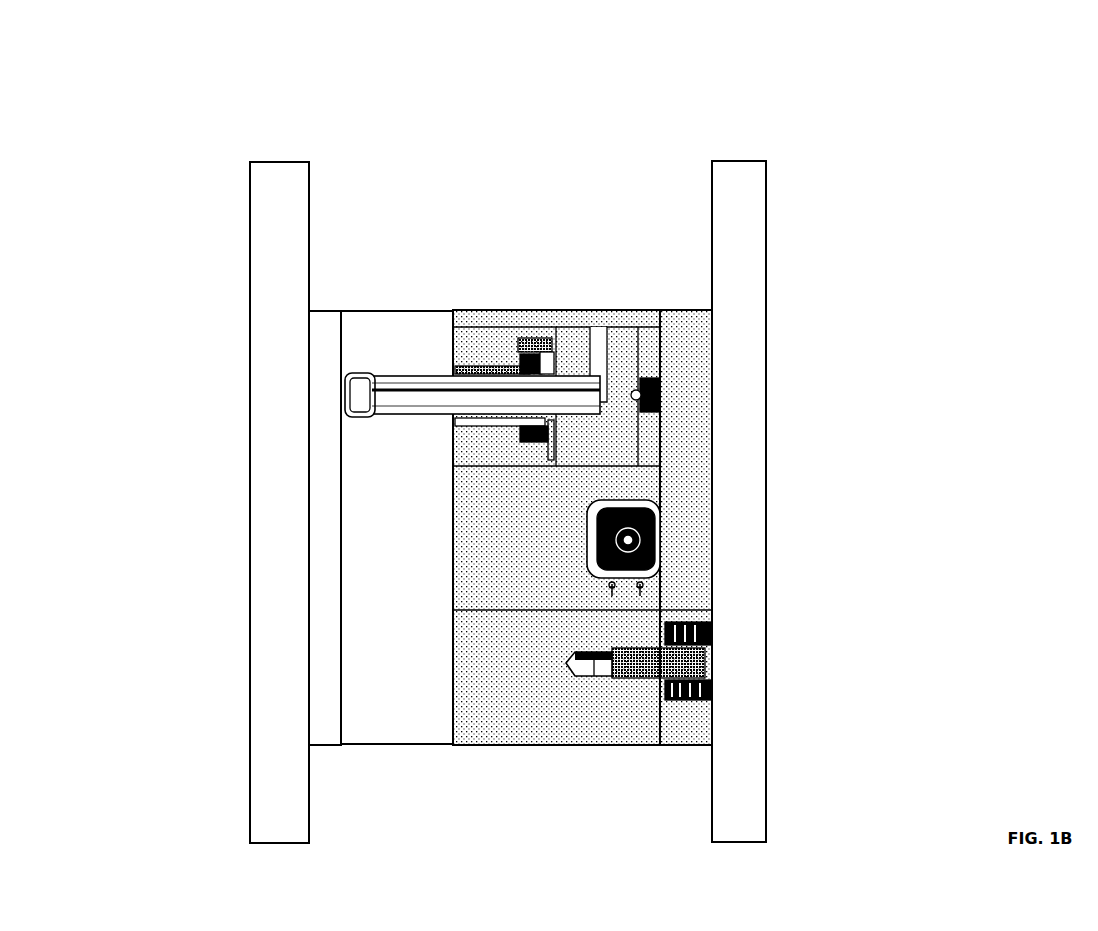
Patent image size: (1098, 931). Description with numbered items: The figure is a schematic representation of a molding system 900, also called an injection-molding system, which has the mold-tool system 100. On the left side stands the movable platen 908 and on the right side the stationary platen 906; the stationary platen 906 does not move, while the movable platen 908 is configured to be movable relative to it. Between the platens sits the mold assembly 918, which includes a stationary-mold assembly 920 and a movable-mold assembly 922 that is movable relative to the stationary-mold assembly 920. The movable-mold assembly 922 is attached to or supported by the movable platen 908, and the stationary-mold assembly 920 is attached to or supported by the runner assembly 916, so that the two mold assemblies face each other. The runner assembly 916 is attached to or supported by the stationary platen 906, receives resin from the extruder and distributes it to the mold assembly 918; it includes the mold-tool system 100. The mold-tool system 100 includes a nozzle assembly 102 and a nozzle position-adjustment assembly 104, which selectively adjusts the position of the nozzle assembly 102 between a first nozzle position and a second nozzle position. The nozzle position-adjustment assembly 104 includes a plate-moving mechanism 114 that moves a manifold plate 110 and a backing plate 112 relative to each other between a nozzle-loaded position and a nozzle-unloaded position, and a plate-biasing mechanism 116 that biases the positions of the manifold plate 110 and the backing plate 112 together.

The molding system 900 is at (782, 91).
The stationary platen 906 is at (738, 161).
The movable platen 908 is at (278, 162).
The mold assembly 918 is at (441, 101).
The stationary-mold assembly 920 is at (378, 323).
The movable-mold assembly 922 is at (332, 330).
The manifold plate 110 is at (551, 745).
The backing plate 112 is at (688, 747).
The runner assembly 916 is at (560, 316).
The nozzle assembly 102 is at (440, 383).
The mold-tool system 100 is at (1002, 358).
The nozzle position-adjustment assembly 104 is at (884, 545).
The plate-moving mechanism 114 is at (658, 538).
The plate-biasing mechanism 116 is at (708, 648).